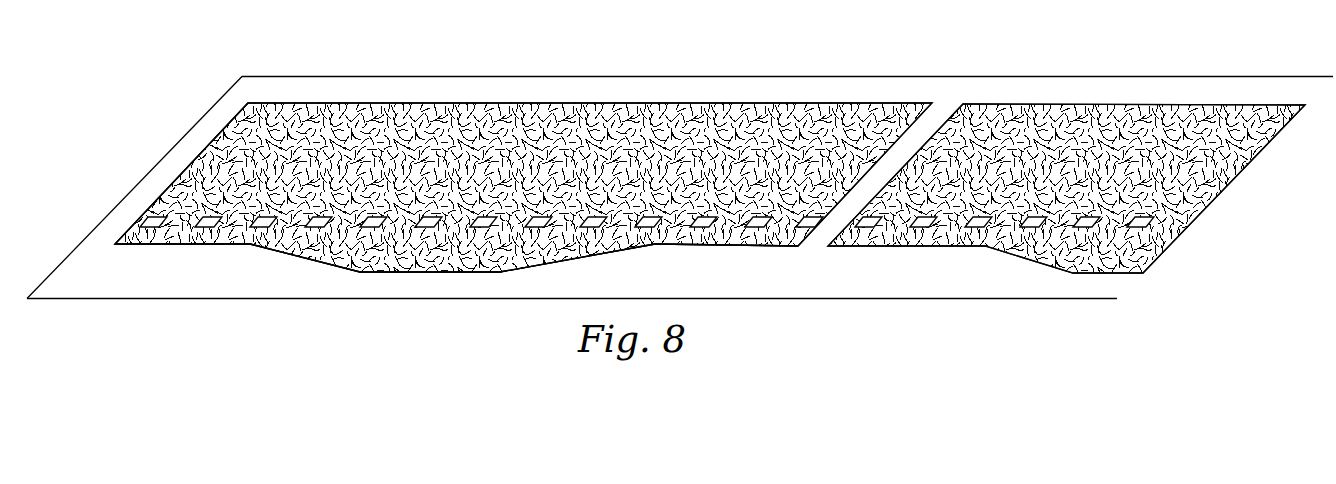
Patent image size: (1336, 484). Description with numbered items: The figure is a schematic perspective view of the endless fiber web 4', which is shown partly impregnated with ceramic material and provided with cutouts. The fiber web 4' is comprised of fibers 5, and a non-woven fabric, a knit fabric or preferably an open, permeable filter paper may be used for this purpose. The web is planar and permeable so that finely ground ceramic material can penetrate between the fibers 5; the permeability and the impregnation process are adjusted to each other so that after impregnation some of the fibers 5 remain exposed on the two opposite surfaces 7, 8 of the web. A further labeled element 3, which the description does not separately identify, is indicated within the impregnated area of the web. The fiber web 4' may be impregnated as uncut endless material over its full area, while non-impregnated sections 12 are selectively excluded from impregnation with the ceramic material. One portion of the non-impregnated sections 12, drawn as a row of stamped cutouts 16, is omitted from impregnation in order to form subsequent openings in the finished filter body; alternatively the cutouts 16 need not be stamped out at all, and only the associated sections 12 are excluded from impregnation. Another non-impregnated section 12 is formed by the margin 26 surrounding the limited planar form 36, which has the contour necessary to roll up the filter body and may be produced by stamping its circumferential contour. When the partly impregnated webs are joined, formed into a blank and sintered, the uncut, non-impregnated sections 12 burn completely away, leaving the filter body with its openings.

The absorbent pad 3 is at (679, 139).
The endless fiber web 4' is at (677, 188).
The fibers 5 is at (482, 173).
The surface of the fiber web 7 is at (394, 129).
The surface of the fiber web 8 is at (341, 301).
The non-impregnated sections 12 is at (257, 273).
The cutouts 16 is at (486, 229).
The margin 26 is at (187, 272).
The limited planar form 36 is at (186, 164).